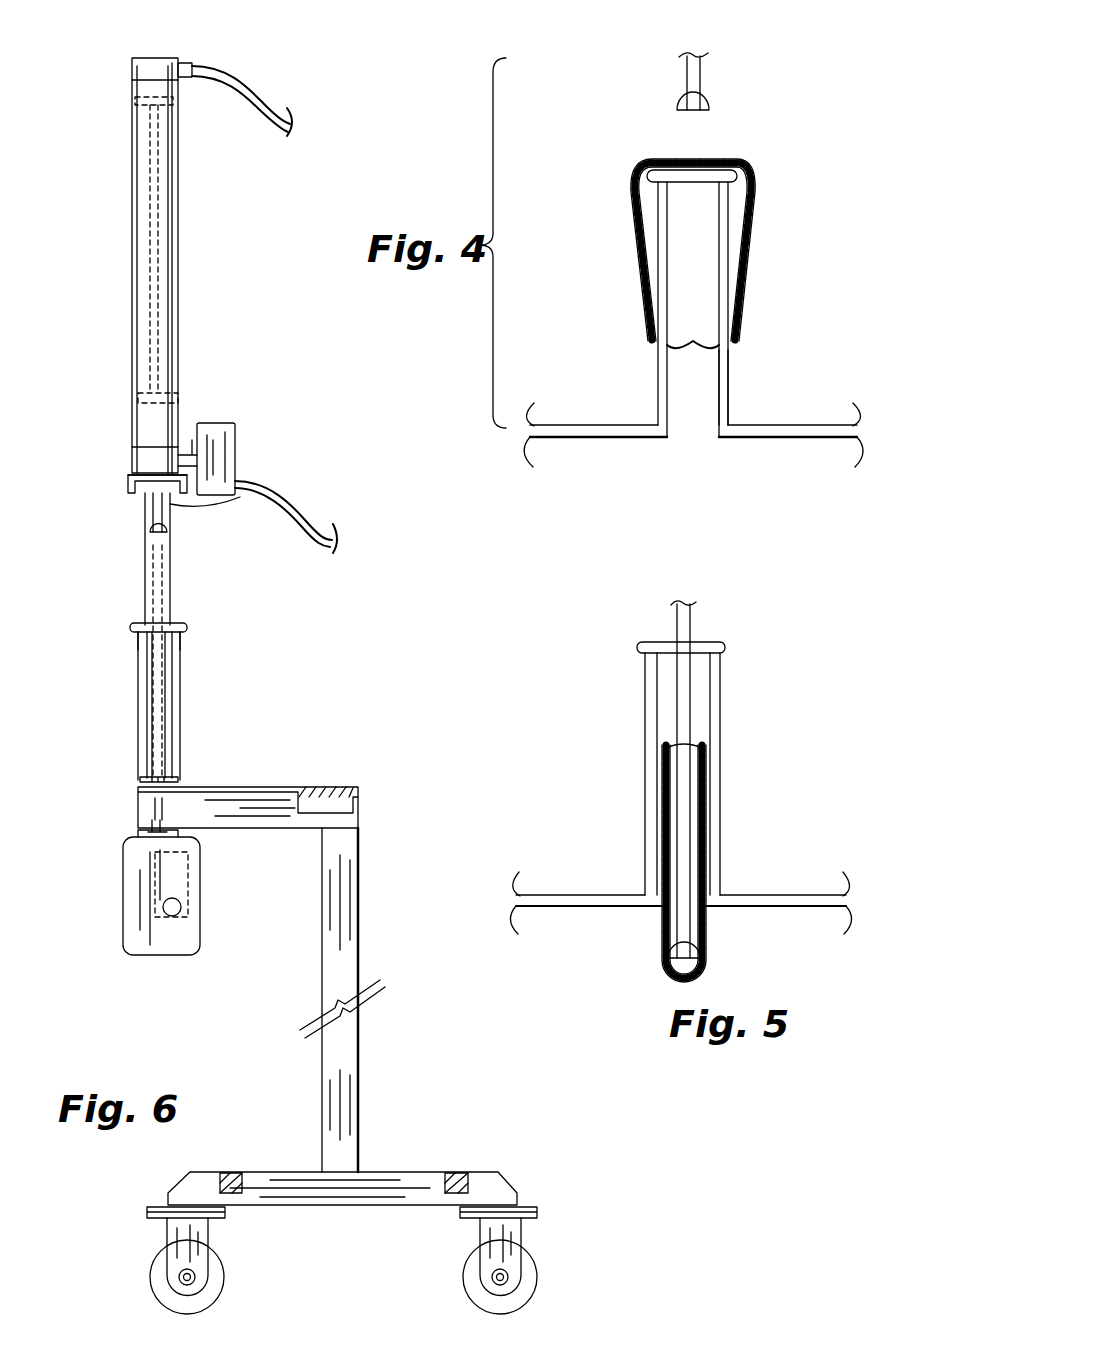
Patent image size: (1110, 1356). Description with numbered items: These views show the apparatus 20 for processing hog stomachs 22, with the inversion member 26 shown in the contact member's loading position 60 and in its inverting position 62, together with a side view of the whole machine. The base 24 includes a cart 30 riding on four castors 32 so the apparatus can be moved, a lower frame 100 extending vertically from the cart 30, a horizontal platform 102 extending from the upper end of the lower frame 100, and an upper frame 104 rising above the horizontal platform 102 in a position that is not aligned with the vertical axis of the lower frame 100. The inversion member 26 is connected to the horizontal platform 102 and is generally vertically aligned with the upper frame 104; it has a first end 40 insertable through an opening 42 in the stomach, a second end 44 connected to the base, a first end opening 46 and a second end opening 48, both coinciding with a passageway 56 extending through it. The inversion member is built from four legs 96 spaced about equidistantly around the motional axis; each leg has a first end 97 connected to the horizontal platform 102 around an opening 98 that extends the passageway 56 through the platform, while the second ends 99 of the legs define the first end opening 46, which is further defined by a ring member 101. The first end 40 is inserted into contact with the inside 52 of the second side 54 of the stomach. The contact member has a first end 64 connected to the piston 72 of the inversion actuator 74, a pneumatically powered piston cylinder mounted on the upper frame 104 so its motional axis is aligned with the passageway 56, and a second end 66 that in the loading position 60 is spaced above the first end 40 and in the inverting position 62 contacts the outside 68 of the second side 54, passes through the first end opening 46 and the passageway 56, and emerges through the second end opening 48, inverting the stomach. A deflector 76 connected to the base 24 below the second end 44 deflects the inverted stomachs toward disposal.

In FIG. 6, the apparatus 20 is at (353, 584).
In FIG. 5, the hog stomach 22 is at (702, 790).
In FIG. 6, the base 24 is at (110, 446).
In FIG. 4, the inversion member 26 is at (650, 362).
In FIG. 5, the inversion member 26 is at (727, 688).
In FIG. 6, the inversion member 26 is at (182, 669).
In FIG. 6, the cart 30 is at (487, 1185).
In FIG. 6, the castors 32 is at (215, 1277).
In FIG. 4, the first end 40 is at (727, 177).
In FIG. 4, the opening 42 is at (692, 347).
In FIG. 4, the second end 44 is at (722, 400).
In FIG. 5, the second end 44 is at (713, 880).
In FIG. 4, the first end opening 46 is at (690, 191).
In FIG. 5, the first end opening 46 is at (709, 642).
In FIG. 4, the second end opening 48 is at (697, 410).
In FIG. 4, the inside of second side 52 is at (649, 201).
In FIG. 5, the inside of second side 52 is at (667, 982).
In FIG. 4, the second side 54 is at (653, 160).
In FIG. 4, the passageway 56 is at (705, 366).
In FIG. 5, the passageway 56 is at (670, 700).
In FIG. 6, the passageway 56 is at (150, 663).
In FIG. 4, the loading position 60 is at (691, 76).
In FIG. 6, the loading position 60 is at (270, 500).
In FIG. 5, the inverting position 62 is at (682, 913).
In FIG. 6, the inverting position 62 is at (180, 733).
In FIG. 6, the first end 64 is at (152, 155).
In FIG. 4, the second end 66 is at (697, 120).
In FIG. 5, the second end 66 is at (688, 967).
In FIG. 6, the second end 66 is at (155, 537).
In FIG. 4, the outside of second side 68 is at (720, 157).
In FIG. 6, the piston 72 is at (136, 99).
In FIG. 6, the inversion actuator 74 is at (192, 209).
In FIG. 6, the deflector 76 is at (185, 935).
In FIG. 6, the legs 96 is at (143, 717).
In FIG. 6, the first end 97 is at (175, 772).
In FIG. 6, the opening 98 is at (172, 808).
In FIG. 6, the second ends 99 is at (140, 643).
In FIG. 6, the lower frame 100 is at (356, 1067).
In FIG. 5, the ring member 101 is at (655, 645).
In FIG. 6, the ring member 101 is at (187, 630).
In FIG. 6, the horizontal platform 102 is at (283, 802).
In FIG. 6, the upper frame 104 is at (147, 570).